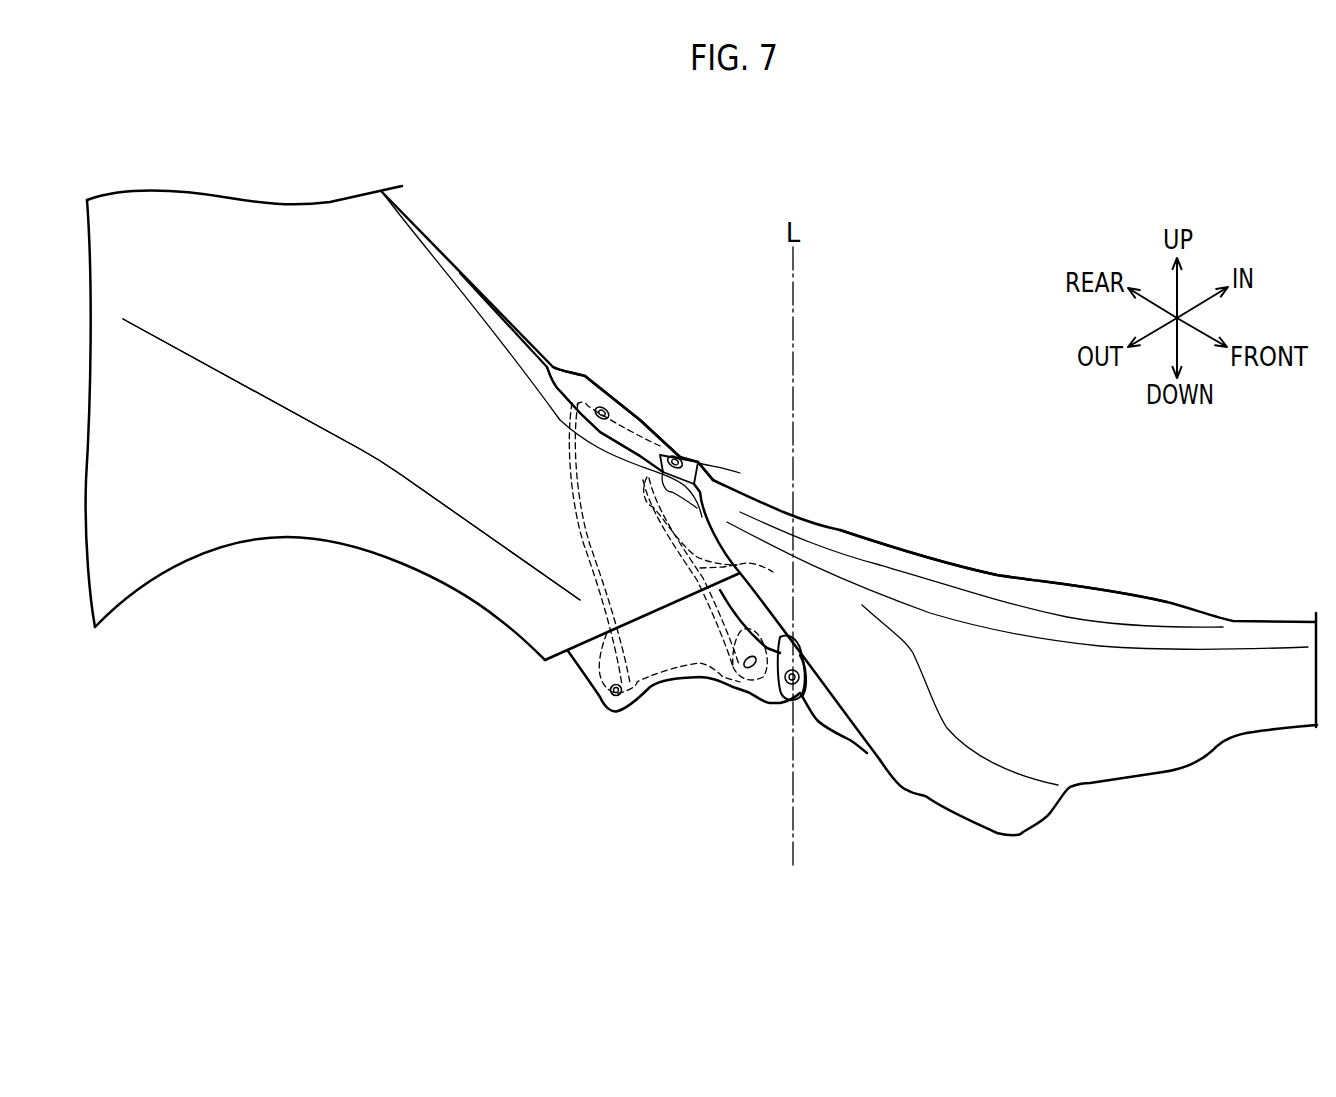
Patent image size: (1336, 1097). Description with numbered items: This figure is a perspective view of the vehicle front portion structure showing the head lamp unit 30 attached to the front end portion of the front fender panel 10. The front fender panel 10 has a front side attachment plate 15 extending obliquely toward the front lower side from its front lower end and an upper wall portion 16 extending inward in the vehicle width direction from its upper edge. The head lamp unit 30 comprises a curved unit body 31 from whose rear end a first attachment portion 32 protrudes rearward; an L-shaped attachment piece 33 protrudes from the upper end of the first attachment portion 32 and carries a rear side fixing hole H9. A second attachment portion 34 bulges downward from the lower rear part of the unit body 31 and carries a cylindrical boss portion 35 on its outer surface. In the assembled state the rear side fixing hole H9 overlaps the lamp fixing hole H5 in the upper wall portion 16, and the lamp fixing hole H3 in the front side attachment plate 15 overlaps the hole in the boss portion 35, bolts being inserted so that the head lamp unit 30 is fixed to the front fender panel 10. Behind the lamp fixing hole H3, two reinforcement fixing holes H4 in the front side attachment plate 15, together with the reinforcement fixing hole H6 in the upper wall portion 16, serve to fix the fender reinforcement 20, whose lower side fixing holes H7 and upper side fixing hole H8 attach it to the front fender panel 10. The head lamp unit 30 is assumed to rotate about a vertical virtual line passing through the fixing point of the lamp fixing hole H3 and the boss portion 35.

The front fender panel 10 is at (248, 605).
The front side attachment plate 15 is at (673, 687).
The upper wall portion 16 is at (600, 388).
The fender reinforcement 20 is at (561, 535).
The head lamp unit 30 is at (1145, 544).
The unit body 31 is at (993, 571).
The first attachment portion 32 is at (773, 572).
The attachment piece 33 is at (740, 473).
The second attachment portion 34 is at (840, 735).
The boss portion 35 is at (790, 690).
The lamp fixing hole H3 is at (764, 724).
The reinforcement fixing holes H4 is at (658, 713).
The lamp fixing hole H5 is at (688, 458).
The reinforcement fixing hole H6 is at (653, 405).
The lower side fixing hole H7 is at (605, 694).
The upper side fixing hole H8 is at (610, 422).
The rear side fixing hole H9 is at (773, 438).